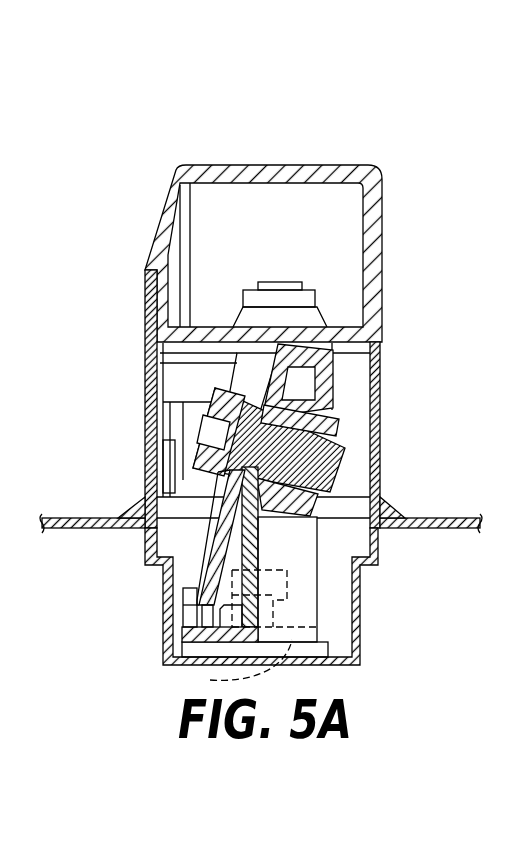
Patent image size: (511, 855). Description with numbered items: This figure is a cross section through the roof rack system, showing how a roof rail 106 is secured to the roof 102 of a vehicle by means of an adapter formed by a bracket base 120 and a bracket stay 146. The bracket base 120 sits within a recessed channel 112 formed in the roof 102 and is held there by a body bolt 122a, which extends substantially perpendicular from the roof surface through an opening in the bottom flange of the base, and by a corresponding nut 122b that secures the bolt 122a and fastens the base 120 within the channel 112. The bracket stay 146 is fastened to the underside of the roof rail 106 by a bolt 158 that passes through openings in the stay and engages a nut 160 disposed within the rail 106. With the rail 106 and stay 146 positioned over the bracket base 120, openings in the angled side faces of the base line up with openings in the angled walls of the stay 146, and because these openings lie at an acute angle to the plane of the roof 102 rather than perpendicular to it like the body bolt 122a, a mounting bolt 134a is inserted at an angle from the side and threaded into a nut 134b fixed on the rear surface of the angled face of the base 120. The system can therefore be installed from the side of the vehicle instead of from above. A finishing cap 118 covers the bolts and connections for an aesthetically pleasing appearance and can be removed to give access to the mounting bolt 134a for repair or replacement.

The roof rail 106 is at (318, 163).
The finishing cap 118 is at (144, 346).
The channel 112 is at (360, 621).
The roof 102 is at (435, 518).
The bolt 158 is at (282, 277).
The nut 160 is at (293, 302).
The bracket stay 146 is at (336, 378).
The mounting bolt 134a is at (315, 462).
The nut 134b is at (330, 431).
The bracket base 120 is at (257, 547).
The threaded bolt 122a is at (233, 650).
The nut 122b is at (287, 585).